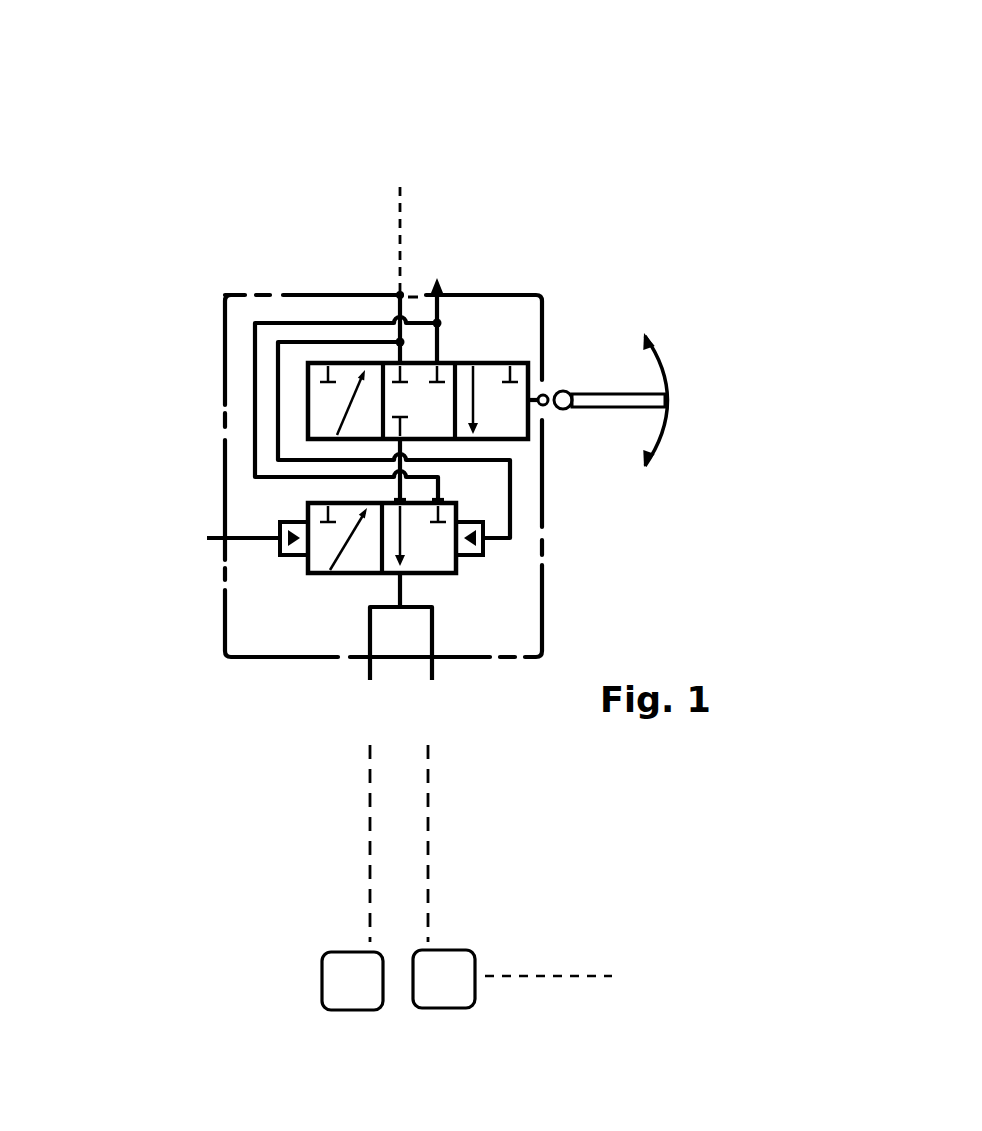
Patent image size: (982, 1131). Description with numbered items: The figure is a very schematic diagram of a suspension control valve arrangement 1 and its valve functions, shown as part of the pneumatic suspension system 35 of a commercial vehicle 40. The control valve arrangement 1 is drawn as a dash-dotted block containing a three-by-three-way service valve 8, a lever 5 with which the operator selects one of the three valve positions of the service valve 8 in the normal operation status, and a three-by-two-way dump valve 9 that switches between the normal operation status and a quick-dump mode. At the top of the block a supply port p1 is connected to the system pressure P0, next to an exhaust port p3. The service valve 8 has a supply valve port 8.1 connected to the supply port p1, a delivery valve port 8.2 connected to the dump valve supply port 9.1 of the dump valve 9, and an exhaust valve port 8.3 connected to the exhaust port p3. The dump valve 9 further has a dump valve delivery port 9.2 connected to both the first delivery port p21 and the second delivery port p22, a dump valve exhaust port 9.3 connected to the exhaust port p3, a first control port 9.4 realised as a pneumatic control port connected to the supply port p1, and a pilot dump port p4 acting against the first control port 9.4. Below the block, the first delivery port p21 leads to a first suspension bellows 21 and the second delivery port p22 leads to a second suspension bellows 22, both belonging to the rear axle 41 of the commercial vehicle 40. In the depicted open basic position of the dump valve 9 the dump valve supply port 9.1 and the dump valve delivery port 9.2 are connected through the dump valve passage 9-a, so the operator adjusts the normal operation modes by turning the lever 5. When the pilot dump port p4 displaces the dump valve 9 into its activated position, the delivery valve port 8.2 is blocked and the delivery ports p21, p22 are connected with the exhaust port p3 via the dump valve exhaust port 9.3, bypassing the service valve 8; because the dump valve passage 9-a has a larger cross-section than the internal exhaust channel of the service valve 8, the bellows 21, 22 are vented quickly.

The commercial vehicle 40 is at (560, 140).
The suspension control valve arrangement 1 is at (220, 291).
The service valve 8 is at (528, 362).
The supply valve port 8.1 is at (396, 362).
The delivery valve port 8.2 is at (392, 440).
The exhaust valve port 8.3 is at (443, 362).
The lever 5 is at (610, 392).
The dump valve 9 is at (307, 566).
The dump valve passage 9-a is at (337, 562).
The dump valve supply port 9.1 is at (396, 503).
The dump valve delivery port 9.2 is at (392, 580).
The dump valve exhaust port 9.3 is at (450, 503).
The first control port 9.4 is at (483, 556).
The system pressure P0 is at (391, 225).
The supply port p1 is at (400, 291).
The exhaust port p3 is at (441, 298).
The pilot dump port p4 is at (232, 538).
The first delivery port p21 is at (382, 774).
The second delivery port p22 is at (443, 815).
The first suspension bellows 21 is at (358, 1005).
The second suspension bellows 22 is at (440, 1002).
The rear axle 41 is at (557, 979).
The pneumatic suspension system 35 is at (183, 948).